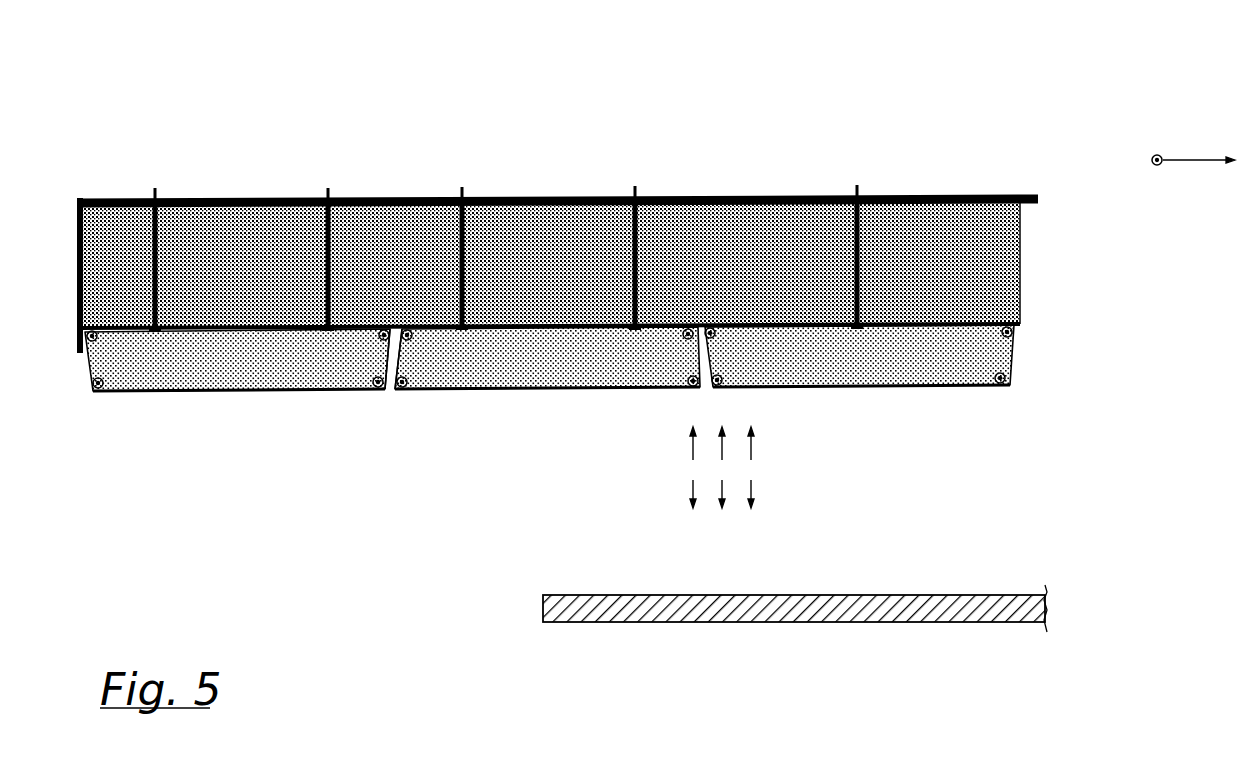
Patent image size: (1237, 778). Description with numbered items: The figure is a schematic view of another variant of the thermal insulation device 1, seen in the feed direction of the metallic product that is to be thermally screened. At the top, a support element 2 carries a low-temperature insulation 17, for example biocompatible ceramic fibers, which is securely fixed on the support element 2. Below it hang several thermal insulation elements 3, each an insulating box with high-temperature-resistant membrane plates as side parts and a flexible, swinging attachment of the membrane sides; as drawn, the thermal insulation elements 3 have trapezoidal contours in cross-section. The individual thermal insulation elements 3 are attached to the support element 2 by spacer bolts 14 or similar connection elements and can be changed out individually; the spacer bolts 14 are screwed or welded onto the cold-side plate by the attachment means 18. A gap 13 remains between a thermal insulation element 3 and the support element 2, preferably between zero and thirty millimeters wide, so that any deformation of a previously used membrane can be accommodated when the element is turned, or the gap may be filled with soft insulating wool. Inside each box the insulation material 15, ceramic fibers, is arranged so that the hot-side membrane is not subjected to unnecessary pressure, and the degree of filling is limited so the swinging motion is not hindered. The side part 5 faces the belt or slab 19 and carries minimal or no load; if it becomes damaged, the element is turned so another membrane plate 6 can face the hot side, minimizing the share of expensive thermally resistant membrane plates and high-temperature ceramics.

The thermal insulation device 1 is at (553, 128).
The support element 2 is at (120, 198).
The thermal insulation element 3 is at (300, 398).
The side part 5 is at (580, 391).
The membrane plate 6 is at (400, 357).
The gap 13 is at (1036, 231).
The spacer bolts 14 is at (333, 230).
The insulation material 15 is at (197, 360).
The low-temperature insulation 17 is at (797, 243).
The attachment means 18 is at (862, 328).
The belt or slab 19 is at (705, 595).